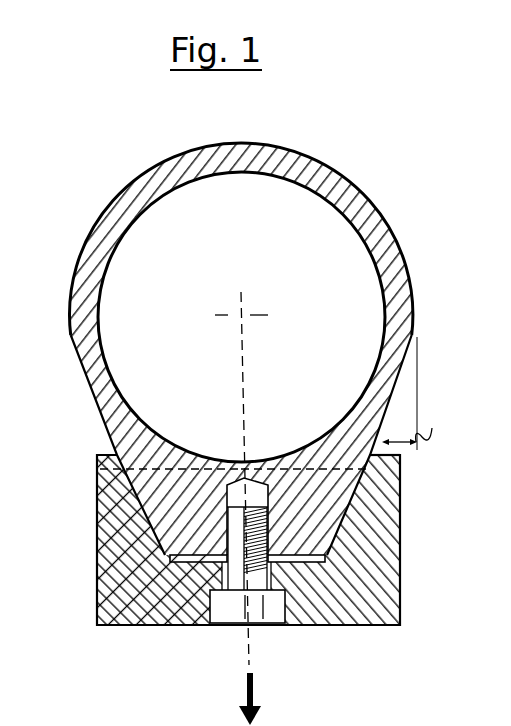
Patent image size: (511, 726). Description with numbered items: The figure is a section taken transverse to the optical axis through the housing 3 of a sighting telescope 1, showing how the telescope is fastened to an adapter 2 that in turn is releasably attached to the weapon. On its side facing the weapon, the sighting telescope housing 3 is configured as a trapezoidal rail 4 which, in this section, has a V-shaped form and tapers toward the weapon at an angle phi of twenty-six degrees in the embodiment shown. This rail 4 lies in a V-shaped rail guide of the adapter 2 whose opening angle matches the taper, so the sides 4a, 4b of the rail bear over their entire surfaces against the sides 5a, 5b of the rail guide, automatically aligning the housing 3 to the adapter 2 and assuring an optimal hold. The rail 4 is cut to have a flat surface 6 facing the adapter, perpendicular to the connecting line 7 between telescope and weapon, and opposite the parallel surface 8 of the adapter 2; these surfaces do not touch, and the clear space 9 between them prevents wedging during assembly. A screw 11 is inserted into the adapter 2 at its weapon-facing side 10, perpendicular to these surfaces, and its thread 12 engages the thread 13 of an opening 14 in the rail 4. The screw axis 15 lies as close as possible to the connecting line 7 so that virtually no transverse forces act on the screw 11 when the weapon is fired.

The sighting telescope 1 is at (325, 156).
The adapter 2 is at (412, 536).
The sighting telescope housing 3 is at (418, 298).
The rail 4 is at (160, 518).
The side of the rail 4a is at (160, 488).
The side of the rail 4b is at (325, 505).
The side of the rail guide 5a is at (116, 469).
The side of the rail guide 5b is at (374, 468).
The flat surface 6 is at (307, 560).
The connecting line 7 is at (243, 369).
The surface of the adapter 8 is at (290, 575).
The clear space 9 is at (325, 558).
The side facing the weapon 10 is at (379, 632).
The screw 11 is at (222, 626).
The thread 12 is at (219, 543).
The thread 13 is at (173, 565).
The opening 14 is at (362, 484).
The screw axis 15 is at (327, 250).